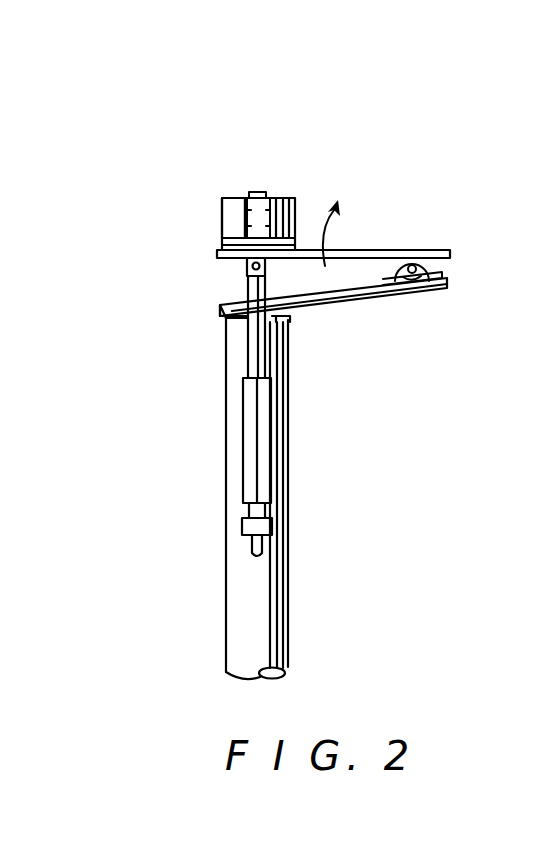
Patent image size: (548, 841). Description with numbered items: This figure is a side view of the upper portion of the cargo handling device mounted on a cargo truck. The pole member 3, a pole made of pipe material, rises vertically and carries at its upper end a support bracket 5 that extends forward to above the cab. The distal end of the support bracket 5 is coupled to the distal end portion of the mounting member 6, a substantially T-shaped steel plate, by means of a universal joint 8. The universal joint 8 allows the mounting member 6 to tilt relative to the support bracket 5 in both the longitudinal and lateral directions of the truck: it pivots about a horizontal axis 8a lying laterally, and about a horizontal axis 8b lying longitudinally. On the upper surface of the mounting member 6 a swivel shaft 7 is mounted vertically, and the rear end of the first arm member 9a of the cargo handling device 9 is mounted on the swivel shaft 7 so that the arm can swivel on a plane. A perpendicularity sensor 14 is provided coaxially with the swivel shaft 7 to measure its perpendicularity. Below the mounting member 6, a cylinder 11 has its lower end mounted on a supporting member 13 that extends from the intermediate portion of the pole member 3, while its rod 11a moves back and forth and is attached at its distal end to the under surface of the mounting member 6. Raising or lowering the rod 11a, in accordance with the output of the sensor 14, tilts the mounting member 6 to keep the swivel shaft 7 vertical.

The pole member 3 is at (268, 592).
The support bracket 5 is at (355, 298).
The mounting member 6 is at (371, 250).
The swivel shaft 7 is at (282, 218).
The universal joint 8 is at (450, 276).
The horizontal axis 8a is at (414, 265).
The horizontal axis 8b is at (388, 290).
The cargo handling device 9 is at (238, 192).
The first arm member 9a is at (222, 215).
The cylinder 11 is at (250, 453).
The rod 11a is at (250, 343).
The supporting member 13 is at (248, 527).
The perpendicularity sensor 14 is at (258, 194).